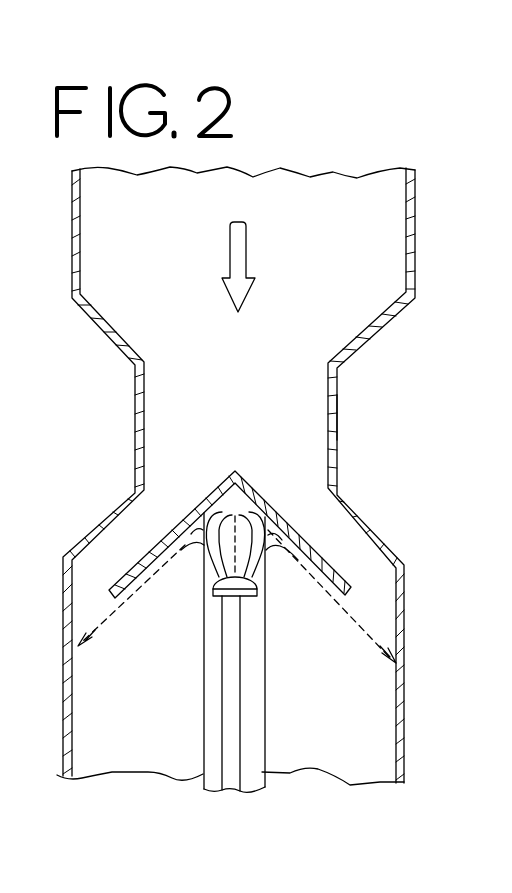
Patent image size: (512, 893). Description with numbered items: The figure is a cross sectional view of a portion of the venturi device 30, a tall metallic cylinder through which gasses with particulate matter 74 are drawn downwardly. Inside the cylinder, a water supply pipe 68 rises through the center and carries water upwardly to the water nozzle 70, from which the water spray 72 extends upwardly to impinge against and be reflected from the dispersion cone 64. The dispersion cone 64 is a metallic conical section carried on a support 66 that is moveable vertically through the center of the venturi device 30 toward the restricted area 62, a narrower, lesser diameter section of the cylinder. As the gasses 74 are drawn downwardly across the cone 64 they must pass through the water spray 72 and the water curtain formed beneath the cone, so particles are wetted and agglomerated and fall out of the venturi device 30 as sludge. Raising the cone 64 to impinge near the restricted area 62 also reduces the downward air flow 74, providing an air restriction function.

The venturi device 30 is at (404, 722).
The restricted area 62 is at (337, 417).
The dispersion cone 64 is at (263, 497).
The support 66 is at (262, 782).
The water supply pipe 68 is at (241, 697).
The water nozzle 70 is at (257, 590).
The water spray 72 is at (353, 618).
The gasses with particulate matter 74 is at (247, 256).